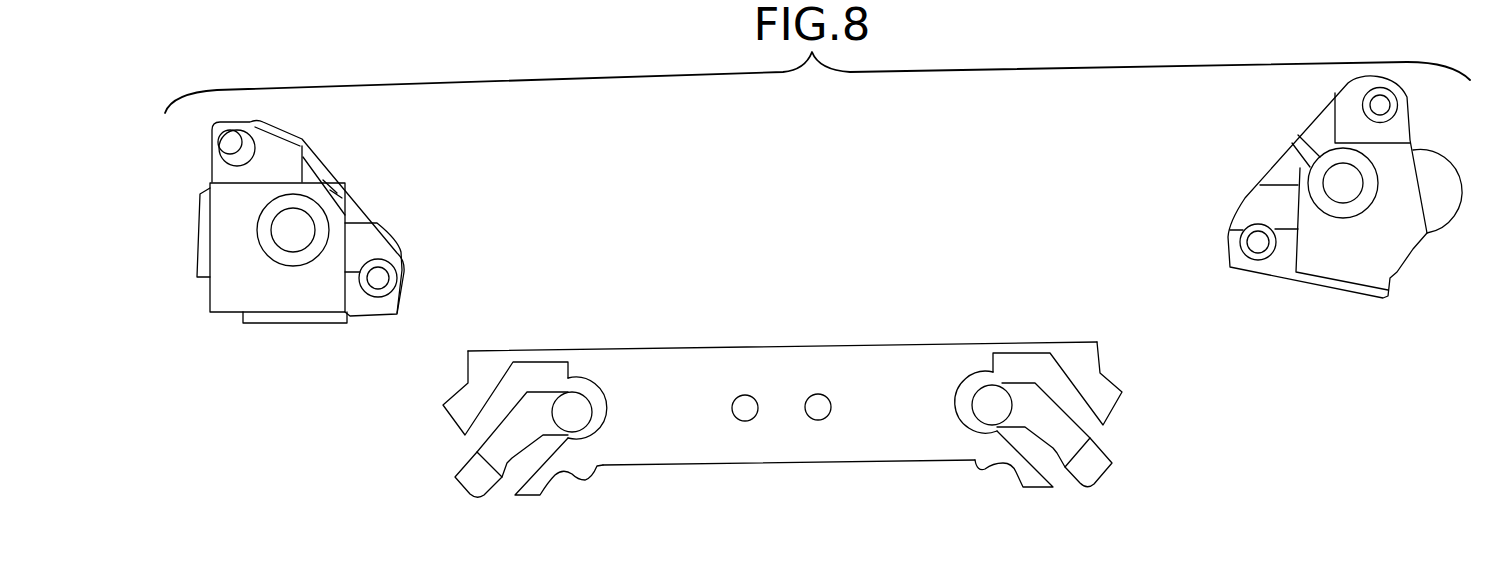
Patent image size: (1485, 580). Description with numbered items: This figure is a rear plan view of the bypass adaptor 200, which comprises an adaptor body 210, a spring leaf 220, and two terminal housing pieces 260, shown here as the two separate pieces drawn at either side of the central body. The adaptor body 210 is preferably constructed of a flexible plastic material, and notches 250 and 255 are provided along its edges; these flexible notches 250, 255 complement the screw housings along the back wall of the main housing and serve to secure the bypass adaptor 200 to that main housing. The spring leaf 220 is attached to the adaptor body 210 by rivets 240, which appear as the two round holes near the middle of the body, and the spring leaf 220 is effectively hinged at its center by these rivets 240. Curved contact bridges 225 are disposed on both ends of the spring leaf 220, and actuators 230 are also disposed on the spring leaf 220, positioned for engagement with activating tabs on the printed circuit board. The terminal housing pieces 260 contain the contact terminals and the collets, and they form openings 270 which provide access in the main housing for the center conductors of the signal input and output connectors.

The bypass adaptor 200 is at (791, 392).
The adaptor body 210 is at (784, 465).
The spring leaf 220 is at (1092, 439).
The curved contact bridges 225 is at (1108, 472).
The actuators 230 is at (600, 403).
The rivets 240 is at (832, 406).
The notches 250 is at (573, 478).
The notches 255 is at (467, 383).
The terminal housing pieces 260 is at (316, 159).
The openings 270 is at (198, 227).